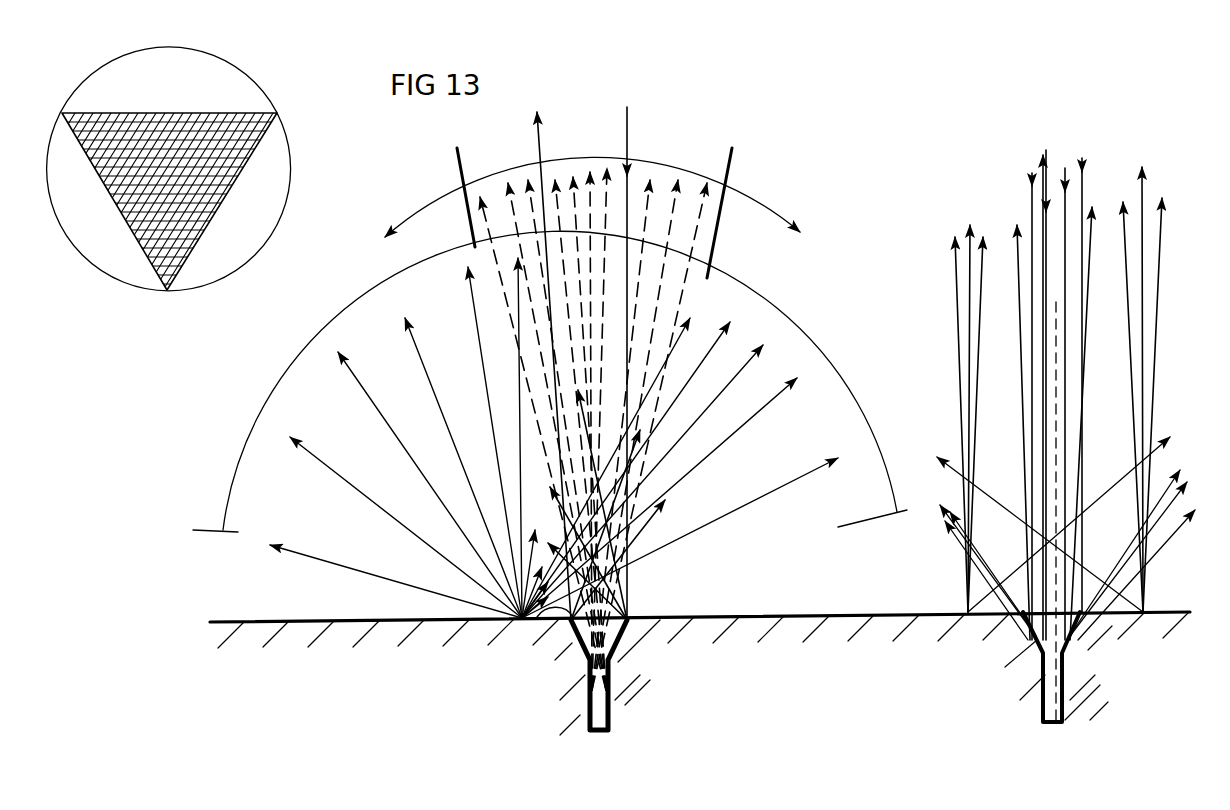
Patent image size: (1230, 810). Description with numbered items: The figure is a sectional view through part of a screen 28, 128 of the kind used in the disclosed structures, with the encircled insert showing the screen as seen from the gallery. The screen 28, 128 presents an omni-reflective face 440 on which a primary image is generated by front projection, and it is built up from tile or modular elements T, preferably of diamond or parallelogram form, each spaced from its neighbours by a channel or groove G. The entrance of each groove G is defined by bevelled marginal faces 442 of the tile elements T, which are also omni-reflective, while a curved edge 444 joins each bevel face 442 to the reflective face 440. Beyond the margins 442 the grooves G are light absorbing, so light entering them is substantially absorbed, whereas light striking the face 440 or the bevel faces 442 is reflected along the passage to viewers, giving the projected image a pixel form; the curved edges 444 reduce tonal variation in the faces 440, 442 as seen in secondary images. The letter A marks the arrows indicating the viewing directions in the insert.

The screen 28 is at (466, 332).
The screen 128 is at (246, 183).
The omni-reflective face 440 is at (338, 597).
The bevelled marginal faces 442 is at (567, 627).
The curved edge 444 is at (527, 623).
The groove G is at (143, 247).
The tile element T is at (133, 202).
The air A is at (215, 141).